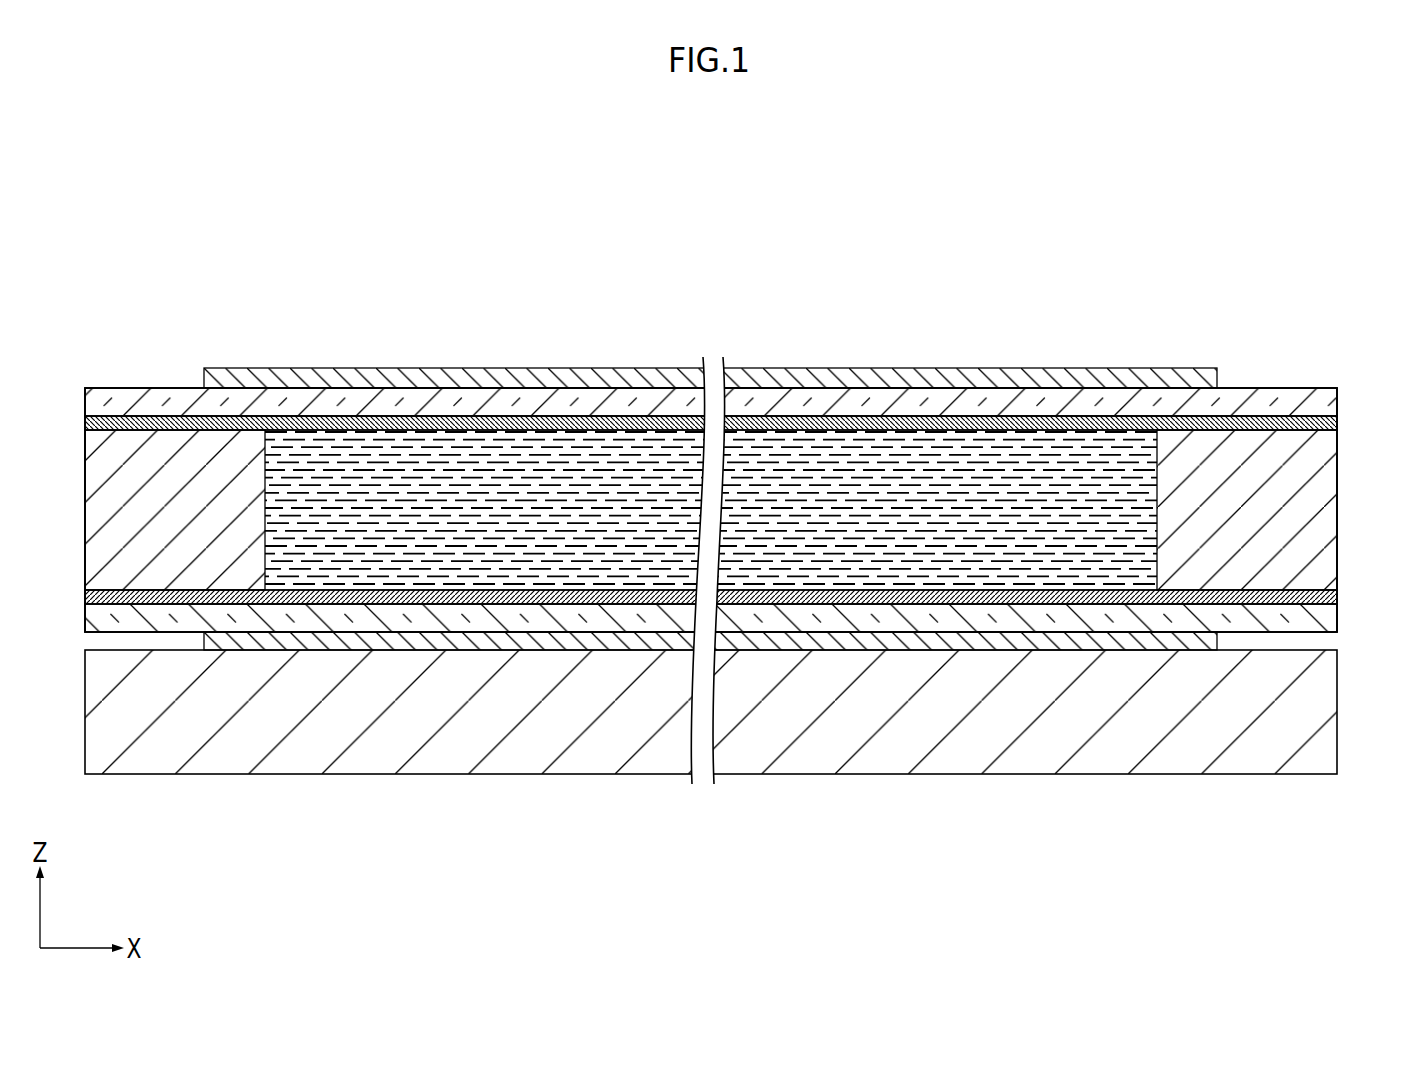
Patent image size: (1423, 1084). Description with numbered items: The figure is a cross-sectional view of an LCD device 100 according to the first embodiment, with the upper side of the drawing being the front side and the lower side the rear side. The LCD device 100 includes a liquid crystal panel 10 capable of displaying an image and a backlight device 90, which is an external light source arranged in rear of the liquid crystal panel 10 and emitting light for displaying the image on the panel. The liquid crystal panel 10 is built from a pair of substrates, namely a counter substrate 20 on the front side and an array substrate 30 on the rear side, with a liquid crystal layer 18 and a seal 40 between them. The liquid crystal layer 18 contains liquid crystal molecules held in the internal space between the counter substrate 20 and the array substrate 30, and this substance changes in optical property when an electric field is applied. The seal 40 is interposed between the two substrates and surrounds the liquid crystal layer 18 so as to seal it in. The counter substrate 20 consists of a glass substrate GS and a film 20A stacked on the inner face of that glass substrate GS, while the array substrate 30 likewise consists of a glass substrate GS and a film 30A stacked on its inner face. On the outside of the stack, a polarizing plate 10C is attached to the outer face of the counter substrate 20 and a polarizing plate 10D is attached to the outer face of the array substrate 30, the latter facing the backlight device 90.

The LCD device 100 is at (703, 129).
The liquid crystal panel 10 is at (1350, 388).
The polarizing plate 10C is at (473, 380).
The polarizing plate 10D is at (400, 653).
The counter substrate 20 is at (558, 312).
The film 20A is at (651, 422).
The array substrate 30 is at (485, 825).
The film 30A is at (605, 606).
The glass substrate GS is at (593, 403).
The seal 40 is at (157, 490).
The liquid crystal layer 18 is at (987, 565).
The backlight device 90 is at (1067, 745).